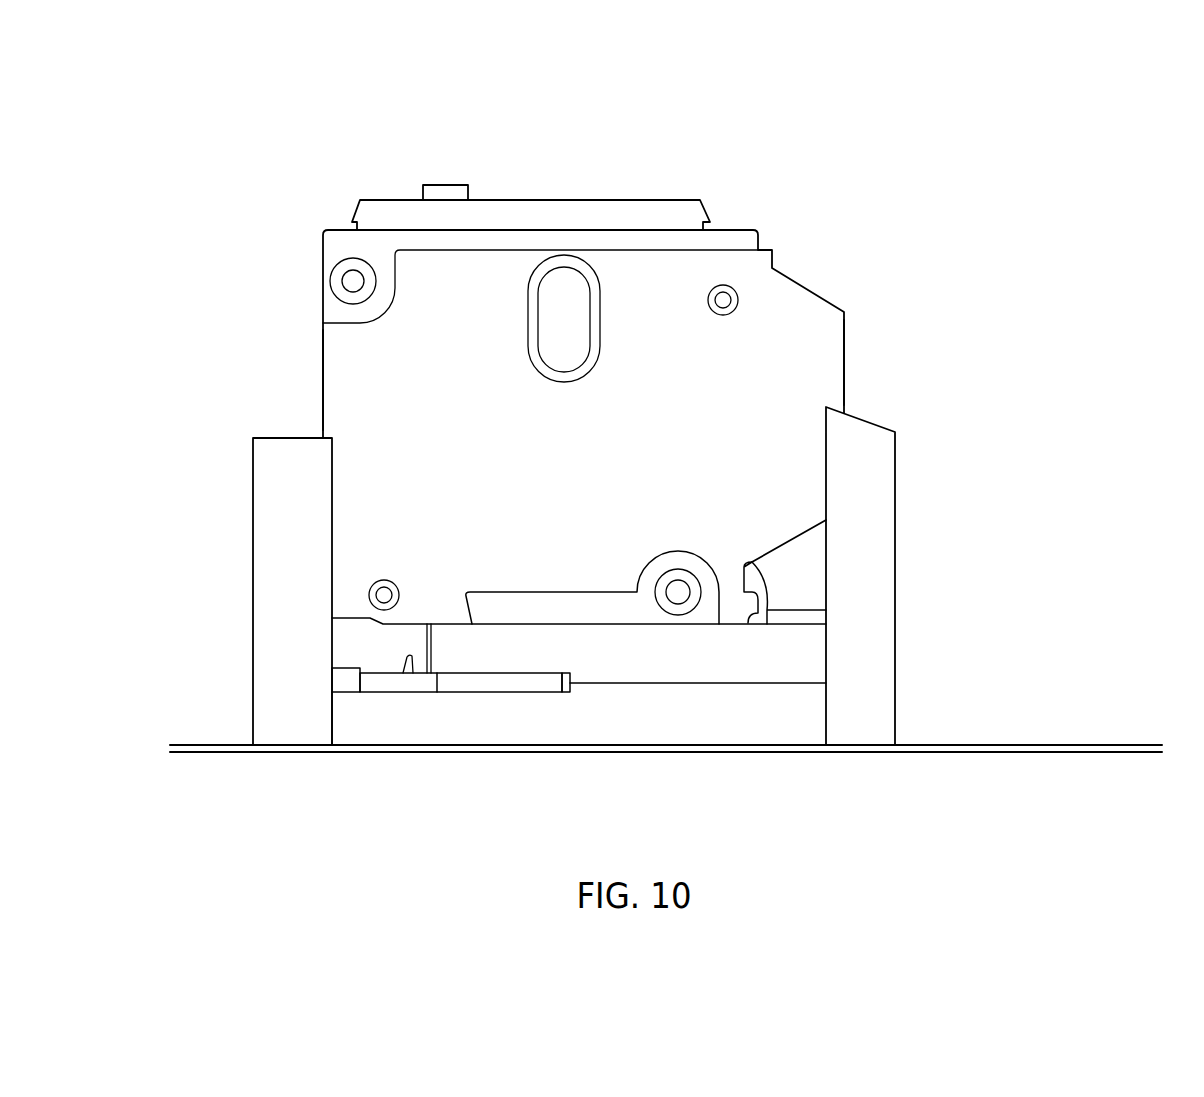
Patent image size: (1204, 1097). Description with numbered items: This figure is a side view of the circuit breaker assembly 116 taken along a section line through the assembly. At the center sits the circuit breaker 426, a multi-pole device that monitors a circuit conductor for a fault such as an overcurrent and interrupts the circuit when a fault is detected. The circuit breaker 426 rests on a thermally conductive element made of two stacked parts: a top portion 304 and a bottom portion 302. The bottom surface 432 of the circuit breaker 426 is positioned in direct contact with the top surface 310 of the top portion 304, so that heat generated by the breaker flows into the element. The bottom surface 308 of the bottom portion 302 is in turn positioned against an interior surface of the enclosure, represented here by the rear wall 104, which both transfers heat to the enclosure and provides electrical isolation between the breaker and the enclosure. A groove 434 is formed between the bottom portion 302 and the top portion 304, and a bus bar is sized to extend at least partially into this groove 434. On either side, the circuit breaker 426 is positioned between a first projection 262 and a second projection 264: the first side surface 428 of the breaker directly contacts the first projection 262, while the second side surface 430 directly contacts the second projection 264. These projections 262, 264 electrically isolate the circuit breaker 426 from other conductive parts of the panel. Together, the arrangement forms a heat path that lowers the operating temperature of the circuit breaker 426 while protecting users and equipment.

The rear wall 104 is at (1132, 733).
The circuit breaker assembly 116 is at (1098, 118).
The first projection 262 is at (257, 513).
The second projection 264 is at (895, 450).
The bottom portion 302 is at (785, 725).
The top portion 304 is at (792, 668).
The bottom surface 308 is at (468, 737).
The top surface 310 is at (618, 624).
The circuit breaker 426 is at (768, 215).
The first side surface 428 is at (322, 355).
The second side surface 430 is at (843, 347).
The bottom surface 432 is at (495, 622).
The groove 434 is at (582, 694).